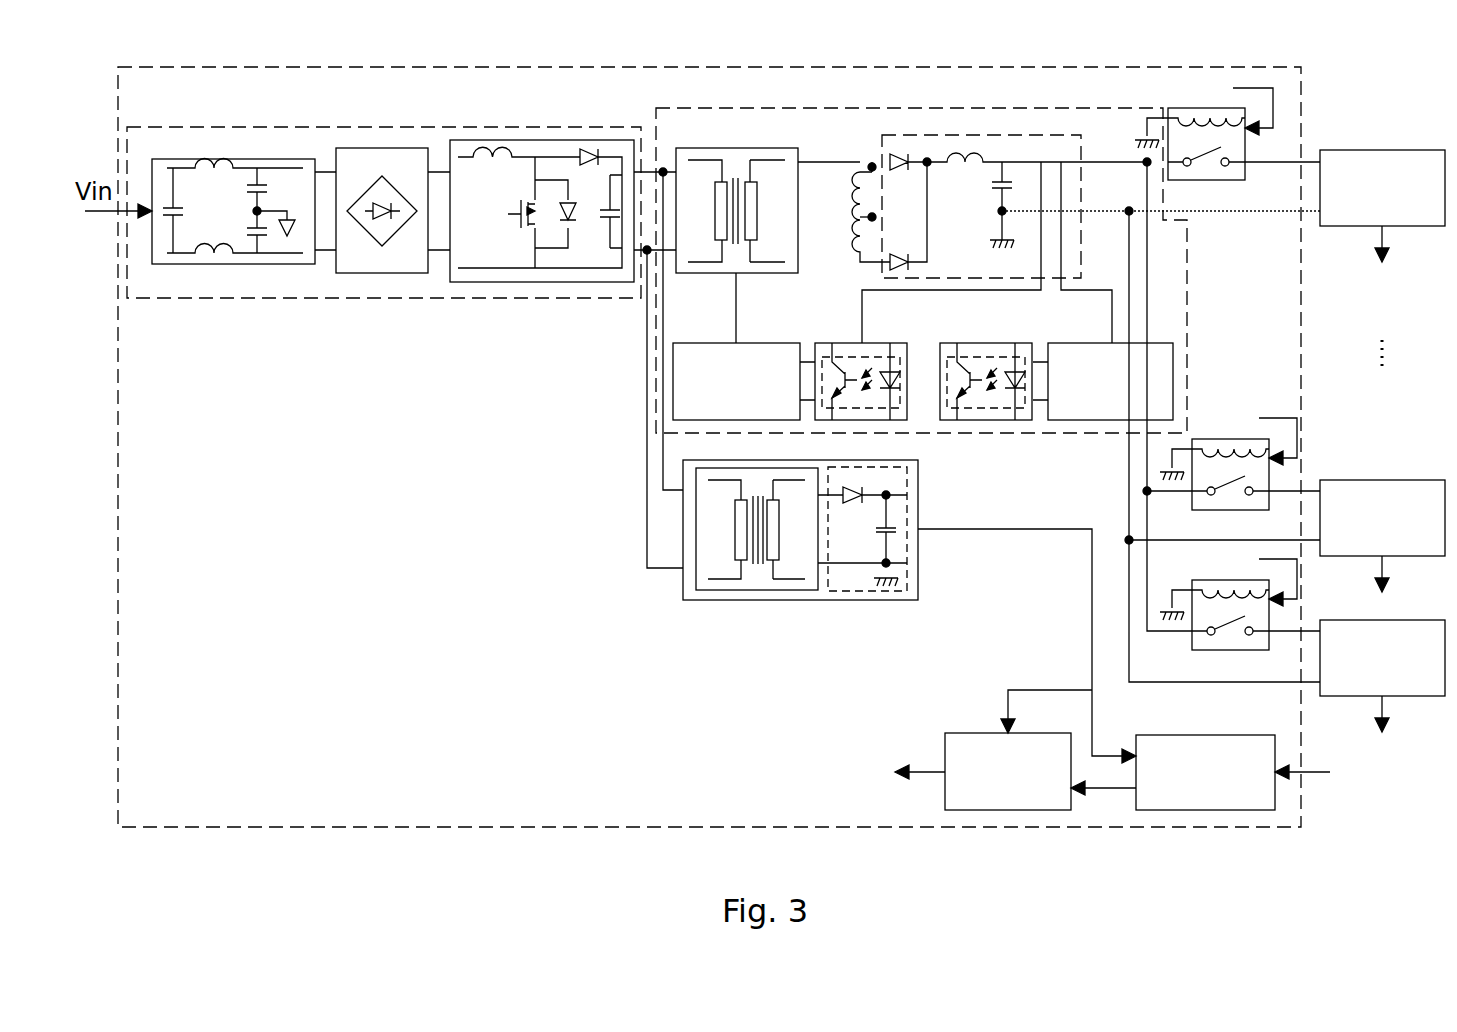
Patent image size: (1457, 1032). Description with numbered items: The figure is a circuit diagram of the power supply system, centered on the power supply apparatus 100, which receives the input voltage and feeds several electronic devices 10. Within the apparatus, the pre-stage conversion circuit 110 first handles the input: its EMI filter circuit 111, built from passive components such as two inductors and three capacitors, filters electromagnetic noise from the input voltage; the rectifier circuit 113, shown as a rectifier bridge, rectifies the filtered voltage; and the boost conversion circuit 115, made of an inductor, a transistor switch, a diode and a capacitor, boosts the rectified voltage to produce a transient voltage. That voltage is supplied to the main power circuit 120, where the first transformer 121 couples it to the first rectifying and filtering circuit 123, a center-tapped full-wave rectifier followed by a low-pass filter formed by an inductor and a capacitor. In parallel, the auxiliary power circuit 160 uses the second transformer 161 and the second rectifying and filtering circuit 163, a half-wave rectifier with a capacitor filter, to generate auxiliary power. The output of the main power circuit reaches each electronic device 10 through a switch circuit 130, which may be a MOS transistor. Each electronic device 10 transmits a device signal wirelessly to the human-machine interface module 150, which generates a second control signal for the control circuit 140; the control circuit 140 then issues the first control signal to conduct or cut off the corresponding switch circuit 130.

The power supply apparatus 100 is at (1168, 67).
The pre-stage conversion circuit 110 is at (175, 127).
The EMI filter circuit 111 is at (258, 159).
The rectifier circuit 113 is at (388, 148).
The boost conversion circuit 115 is at (552, 140).
The main power circuit 120 is at (840, 108).
The first transformer 121 is at (740, 148).
The first rectifying and filtering circuit 123 is at (1014, 135).
The switch circuit 130 is at (1245, 175).
The control circuit 140 is at (977, 810).
The human-machine interface module 150 is at (1168, 810).
The auxiliary power circuit 160 is at (909, 611).
The second transformer 161 is at (717, 591).
The second rectifying and filtering circuit 163 is at (838, 591).
The electronic device 10 is at (1341, 150).